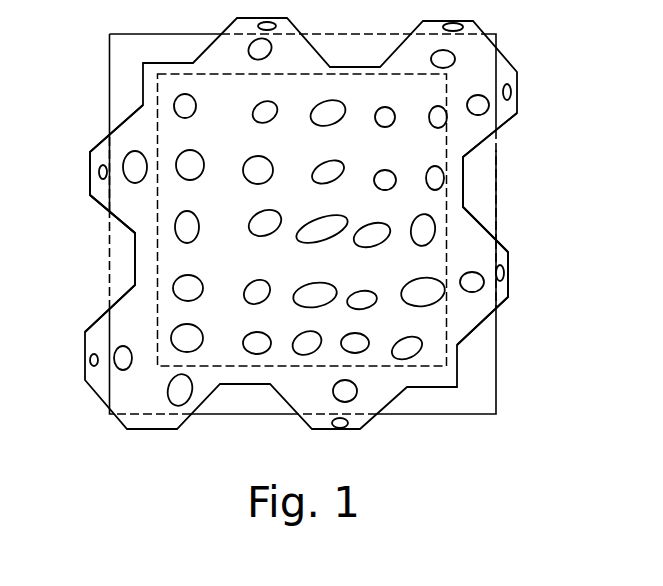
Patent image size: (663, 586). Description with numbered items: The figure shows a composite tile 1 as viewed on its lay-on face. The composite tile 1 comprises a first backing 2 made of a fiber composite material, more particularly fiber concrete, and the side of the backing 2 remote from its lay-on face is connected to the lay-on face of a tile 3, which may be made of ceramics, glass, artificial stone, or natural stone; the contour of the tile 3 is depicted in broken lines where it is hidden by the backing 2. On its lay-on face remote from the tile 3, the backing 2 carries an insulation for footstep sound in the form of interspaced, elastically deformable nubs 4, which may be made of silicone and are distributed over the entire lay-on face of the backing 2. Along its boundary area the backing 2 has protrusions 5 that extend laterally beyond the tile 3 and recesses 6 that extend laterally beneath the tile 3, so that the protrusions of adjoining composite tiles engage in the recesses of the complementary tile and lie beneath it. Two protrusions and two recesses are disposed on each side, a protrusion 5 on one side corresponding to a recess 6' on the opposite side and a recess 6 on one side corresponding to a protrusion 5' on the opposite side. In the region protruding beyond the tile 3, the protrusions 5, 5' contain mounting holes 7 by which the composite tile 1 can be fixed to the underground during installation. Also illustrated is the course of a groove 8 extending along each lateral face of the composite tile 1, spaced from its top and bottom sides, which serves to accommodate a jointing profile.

The composite tile 1 is at (520, 383).
The first backing 2 is at (398, 257).
The tile 3 is at (496, 198).
The nubs 4 is at (185, 222).
The protrusion 5 is at (521, 290).
The protrusion 5' is at (82, 169).
The recess 6 is at (523, 182).
The recess 6' is at (76, 263).
The mounting hole 7 is at (505, 272).
The groove 8 is at (157, 88).